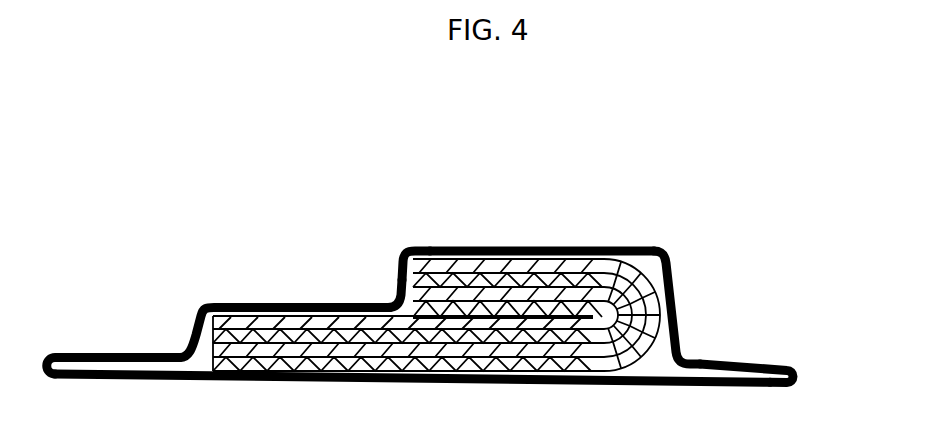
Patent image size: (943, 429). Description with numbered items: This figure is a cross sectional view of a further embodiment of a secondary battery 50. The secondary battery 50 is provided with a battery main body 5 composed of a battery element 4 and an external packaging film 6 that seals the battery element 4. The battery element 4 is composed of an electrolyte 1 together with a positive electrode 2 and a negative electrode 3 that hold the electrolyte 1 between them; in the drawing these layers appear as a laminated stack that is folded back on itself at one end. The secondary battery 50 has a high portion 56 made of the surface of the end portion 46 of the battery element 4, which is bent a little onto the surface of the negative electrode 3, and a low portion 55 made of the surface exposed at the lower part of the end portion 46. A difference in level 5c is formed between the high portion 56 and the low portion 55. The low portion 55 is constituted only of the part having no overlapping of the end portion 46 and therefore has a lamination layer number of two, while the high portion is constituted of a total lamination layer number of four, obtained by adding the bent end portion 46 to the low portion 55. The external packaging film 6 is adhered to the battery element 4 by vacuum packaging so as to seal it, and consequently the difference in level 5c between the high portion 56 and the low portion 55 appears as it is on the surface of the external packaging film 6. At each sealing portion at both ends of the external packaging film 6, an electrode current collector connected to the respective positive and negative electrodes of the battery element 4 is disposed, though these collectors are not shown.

The secondary battery 50 is at (415, 190).
The battery main body 5 is at (412, 378).
The battery element 4 is at (587, 187).
The electrolyte 1 is at (559, 270).
The positive electrode 2 is at (528, 275).
The negative electrode 3 is at (504, 265).
The external packaging film 6 is at (690, 320).
The end portion 46 is at (403, 252).
The low portion 55 is at (216, 300).
The high portion 56 is at (427, 253).
The difference in level 5c is at (388, 298).